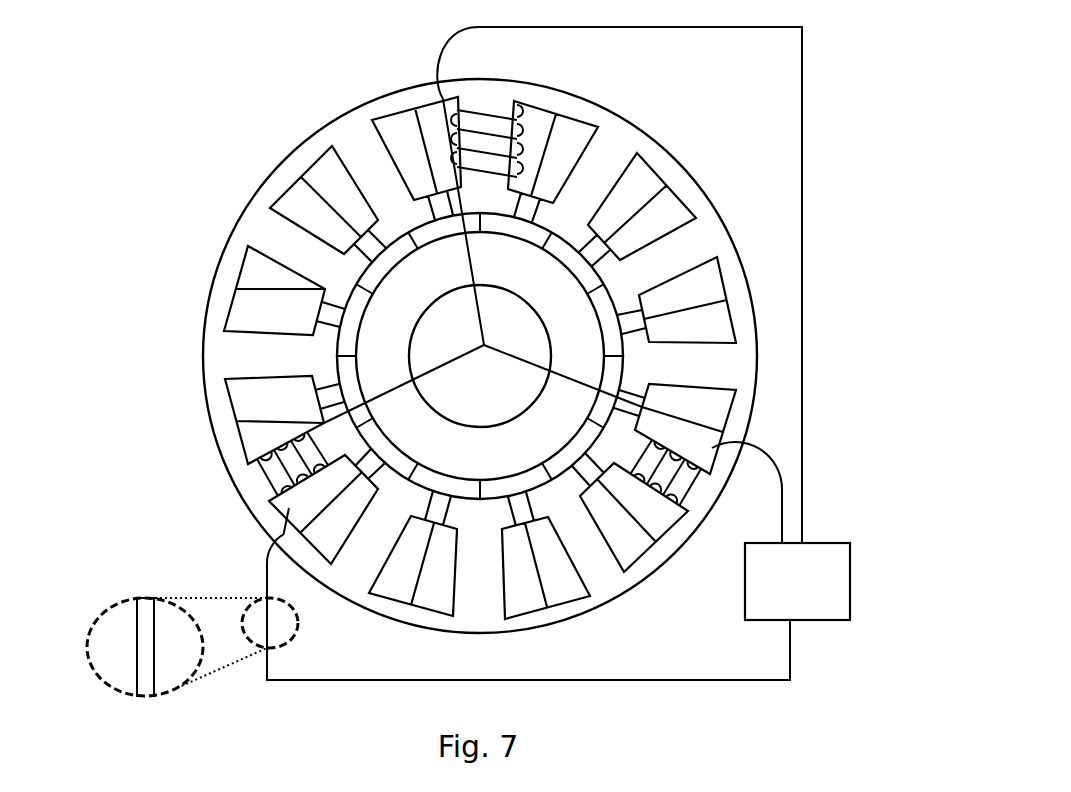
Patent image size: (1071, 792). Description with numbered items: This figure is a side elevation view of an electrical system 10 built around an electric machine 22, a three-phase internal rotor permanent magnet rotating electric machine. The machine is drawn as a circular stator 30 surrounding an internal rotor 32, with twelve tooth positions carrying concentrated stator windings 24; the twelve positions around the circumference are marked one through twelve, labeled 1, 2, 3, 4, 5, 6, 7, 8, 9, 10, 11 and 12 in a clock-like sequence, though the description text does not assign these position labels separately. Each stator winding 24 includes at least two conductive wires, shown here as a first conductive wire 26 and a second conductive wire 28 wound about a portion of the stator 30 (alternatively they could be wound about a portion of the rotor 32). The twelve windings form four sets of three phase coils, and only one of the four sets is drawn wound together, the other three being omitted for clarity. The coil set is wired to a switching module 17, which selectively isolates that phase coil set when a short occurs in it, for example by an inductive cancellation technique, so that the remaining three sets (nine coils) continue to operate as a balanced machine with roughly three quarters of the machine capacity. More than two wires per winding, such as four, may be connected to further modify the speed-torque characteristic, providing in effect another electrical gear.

The stator slot 1 is at (486, 142).
The stator slot 2 is at (596, 173).
The stator slot 3 is at (672, 254).
The stator slot 4 is at (693, 365).
The stator slot 5 is at (666, 466).
The stator slot 6 is at (587, 542).
The stator slot 7 is at (478, 572).
The stator slot 8 is at (371, 545).
The stator slot 9 is at (289, 466).
The electrical system 10 is at (268, 115).
The stator slot 11 is at (283, 245).
The stator slot 12 is at (370, 166).
The switching module 17 is at (850, 578).
The electric machine 22 is at (673, 158).
The stator windings 24 is at (497, 110).
The first conductive wire 26 is at (133, 603).
The second conductive wire 28 is at (155, 603).
The stator 30 is at (230, 435).
The rotor 32 is at (537, 413).